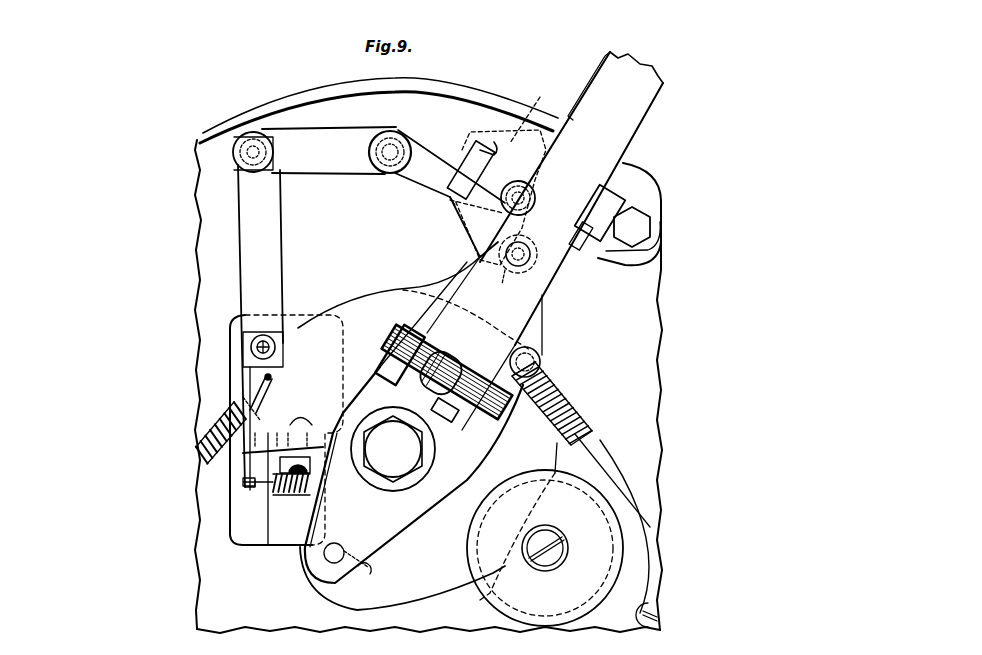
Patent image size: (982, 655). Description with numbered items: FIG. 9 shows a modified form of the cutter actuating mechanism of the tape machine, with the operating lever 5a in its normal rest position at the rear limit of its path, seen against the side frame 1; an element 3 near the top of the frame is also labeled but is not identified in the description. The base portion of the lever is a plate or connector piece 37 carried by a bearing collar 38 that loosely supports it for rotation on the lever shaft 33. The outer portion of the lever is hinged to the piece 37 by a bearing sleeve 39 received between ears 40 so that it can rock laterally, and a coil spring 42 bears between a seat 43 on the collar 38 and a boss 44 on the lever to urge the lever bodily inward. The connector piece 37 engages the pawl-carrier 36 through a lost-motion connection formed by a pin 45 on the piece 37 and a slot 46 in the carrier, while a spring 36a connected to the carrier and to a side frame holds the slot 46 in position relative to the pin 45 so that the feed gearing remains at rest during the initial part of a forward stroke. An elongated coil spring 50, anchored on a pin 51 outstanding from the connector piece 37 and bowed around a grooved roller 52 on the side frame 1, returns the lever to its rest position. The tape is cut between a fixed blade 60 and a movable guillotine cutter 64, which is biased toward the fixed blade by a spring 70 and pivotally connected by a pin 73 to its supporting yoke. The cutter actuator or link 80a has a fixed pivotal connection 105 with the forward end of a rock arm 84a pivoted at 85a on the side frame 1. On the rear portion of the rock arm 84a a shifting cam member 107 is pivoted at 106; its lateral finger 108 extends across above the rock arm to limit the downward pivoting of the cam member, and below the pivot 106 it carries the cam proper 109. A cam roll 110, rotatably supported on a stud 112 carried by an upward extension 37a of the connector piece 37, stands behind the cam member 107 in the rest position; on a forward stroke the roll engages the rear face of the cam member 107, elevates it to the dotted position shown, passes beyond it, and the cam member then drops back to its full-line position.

The side frame 1 is at (348, 114).
The rail 3 is at (485, 95).
The operating lever 5a is at (635, 108).
The lever shaft 33 is at (390, 470).
The pawl-carrier 36 is at (368, 300).
The spring 36a is at (202, 448).
The connector piece 37 is at (393, 528).
The upward extension 37a is at (532, 308).
The bearing collar 38 is at (381, 412).
The bearing sleeve 39 is at (423, 348).
The ears 40 is at (403, 338).
The coil spring 42 is at (445, 418).
The seat 43 is at (422, 408).
The boss 44 is at (458, 366).
The pin 45 is at (335, 548).
The slot 46 is at (362, 574).
The coil spring 50 is at (598, 448).
The pin 51 is at (532, 356).
The grooved roller 52 is at (491, 595).
The fixed blade 60 is at (265, 427).
The movable cutter 64 is at (253, 400).
The spring 70 is at (280, 496).
The pin 73 is at (277, 348).
The cutter actuator link 80a is at (270, 257).
The rock arm 84a is at (323, 163).
The pivot 85a is at (392, 148).
The pivotal connection 105 is at (248, 154).
The pivot 106 is at (533, 193).
The cam member 107 is at (460, 238).
The lateral finger 108 is at (483, 147).
The cam proper 109 is at (456, 210).
The cam roll 110 is at (507, 274).
The stud 112 is at (525, 246).